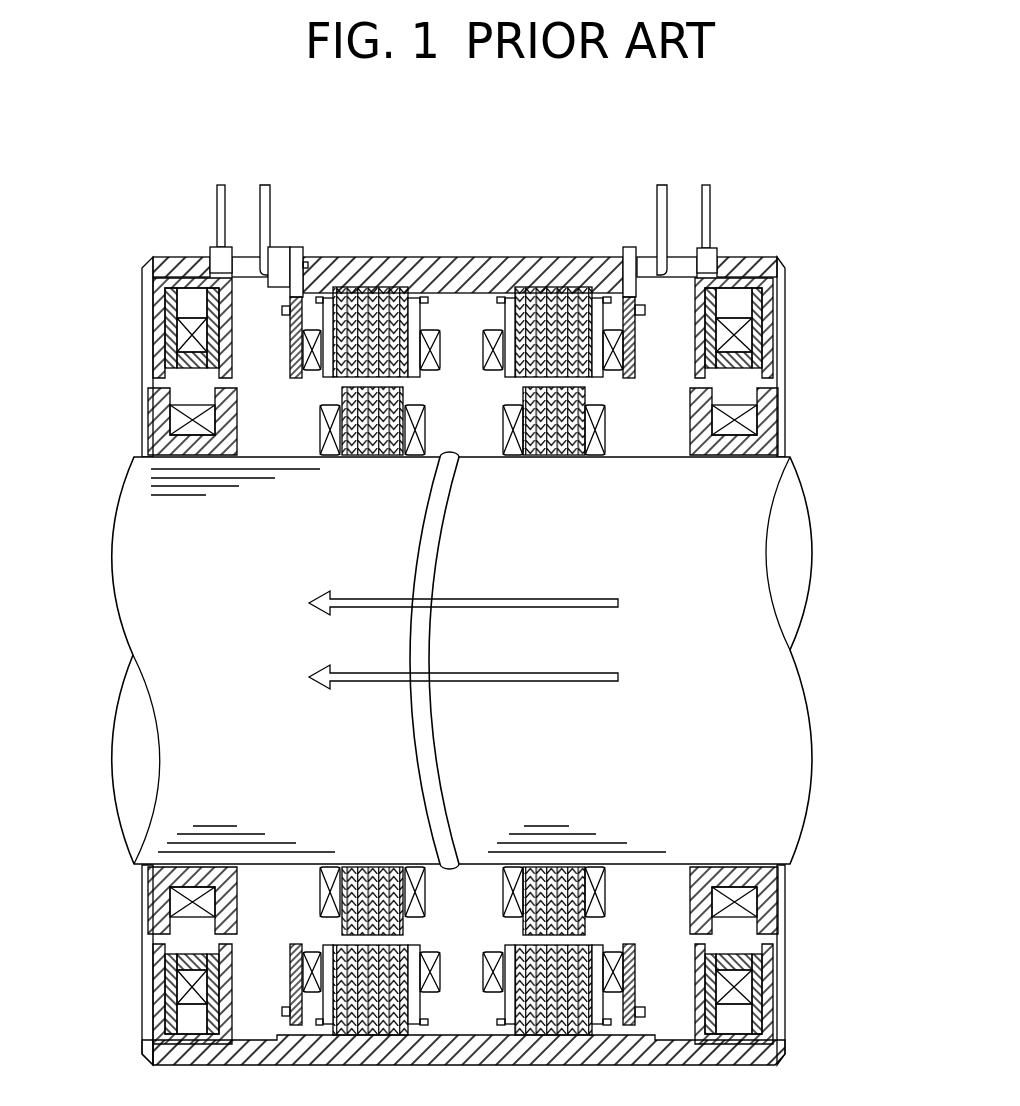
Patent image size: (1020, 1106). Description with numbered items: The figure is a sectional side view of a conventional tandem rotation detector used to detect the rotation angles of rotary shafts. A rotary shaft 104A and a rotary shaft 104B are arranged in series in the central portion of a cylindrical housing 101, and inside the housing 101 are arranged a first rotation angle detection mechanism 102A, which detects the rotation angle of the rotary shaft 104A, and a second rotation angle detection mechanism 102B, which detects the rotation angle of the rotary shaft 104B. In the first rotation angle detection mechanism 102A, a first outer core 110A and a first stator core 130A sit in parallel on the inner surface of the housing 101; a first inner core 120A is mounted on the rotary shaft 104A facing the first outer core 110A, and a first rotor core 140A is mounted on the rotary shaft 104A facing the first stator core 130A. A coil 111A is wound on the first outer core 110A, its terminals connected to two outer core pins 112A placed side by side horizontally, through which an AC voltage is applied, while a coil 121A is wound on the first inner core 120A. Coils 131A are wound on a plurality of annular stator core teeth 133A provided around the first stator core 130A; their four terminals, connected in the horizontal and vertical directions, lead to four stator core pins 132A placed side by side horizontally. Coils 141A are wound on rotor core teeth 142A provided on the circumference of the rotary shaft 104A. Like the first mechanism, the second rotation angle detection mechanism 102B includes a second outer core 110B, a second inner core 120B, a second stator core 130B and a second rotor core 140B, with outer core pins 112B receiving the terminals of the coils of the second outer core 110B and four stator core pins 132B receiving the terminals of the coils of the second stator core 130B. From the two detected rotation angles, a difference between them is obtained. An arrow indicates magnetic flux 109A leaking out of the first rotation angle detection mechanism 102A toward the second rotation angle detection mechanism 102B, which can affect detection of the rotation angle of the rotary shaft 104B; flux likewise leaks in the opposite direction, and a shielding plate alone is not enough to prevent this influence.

The cylindrical housing 101 is at (158, 262).
The first rotation angle detection mechanism 102A is at (575, 283).
The second rotation angle detection mechanism 102B is at (370, 271).
The rotary shaft 104A is at (680, 751).
The rotary shaft 104B is at (347, 751).
The magnetic flux 109A is at (620, 603).
The first outer core 110A is at (777, 300).
The second outer core 110B is at (149, 305).
The coil 111A is at (741, 335).
The outer core pins 112A is at (711, 222).
The outer core pins 112B is at (216, 200).
The first inner core 120A is at (780, 410).
The second inner core 120B is at (149, 412).
The coil 121A is at (752, 427).
The first stator core 130A is at (494, 372).
The second stator core 130B is at (430, 378).
The coils 131A is at (614, 373).
The stator core pins 132A is at (668, 212).
The stator core pins 132B is at (271, 212).
The stator core teeth 133A is at (588, 378).
The first rotor core 140A is at (573, 460).
The second rotor core 140B is at (354, 460).
The coils 141A is at (607, 440).
The rotor core teeth 142A is at (545, 457).